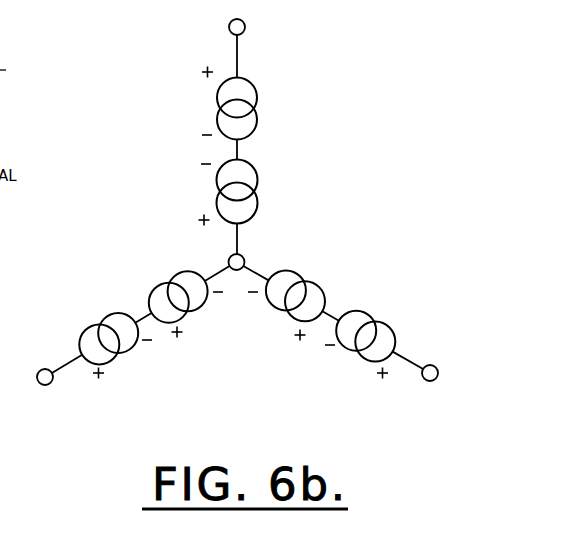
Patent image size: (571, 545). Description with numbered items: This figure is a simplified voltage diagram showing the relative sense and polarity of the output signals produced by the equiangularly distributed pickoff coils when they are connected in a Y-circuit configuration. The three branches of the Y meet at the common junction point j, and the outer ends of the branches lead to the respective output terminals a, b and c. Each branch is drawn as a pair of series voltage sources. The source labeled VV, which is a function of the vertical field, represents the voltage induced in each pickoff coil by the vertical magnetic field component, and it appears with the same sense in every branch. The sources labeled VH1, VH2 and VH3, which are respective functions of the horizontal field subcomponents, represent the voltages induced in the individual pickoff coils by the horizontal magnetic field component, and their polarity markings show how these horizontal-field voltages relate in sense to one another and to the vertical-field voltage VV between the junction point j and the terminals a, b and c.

The output terminal a is at (237, 38).
The output terminal b is at (437, 379).
The output terminal c is at (35, 378).
The junction point j is at (243, 257).
The vertical field voltage VV is at (239, 223).
The horizontal field voltage VH1 is at (248, 193).
The horizontal field voltage VH2 is at (293, 297).
The horizontal field voltage VH3 is at (186, 293).